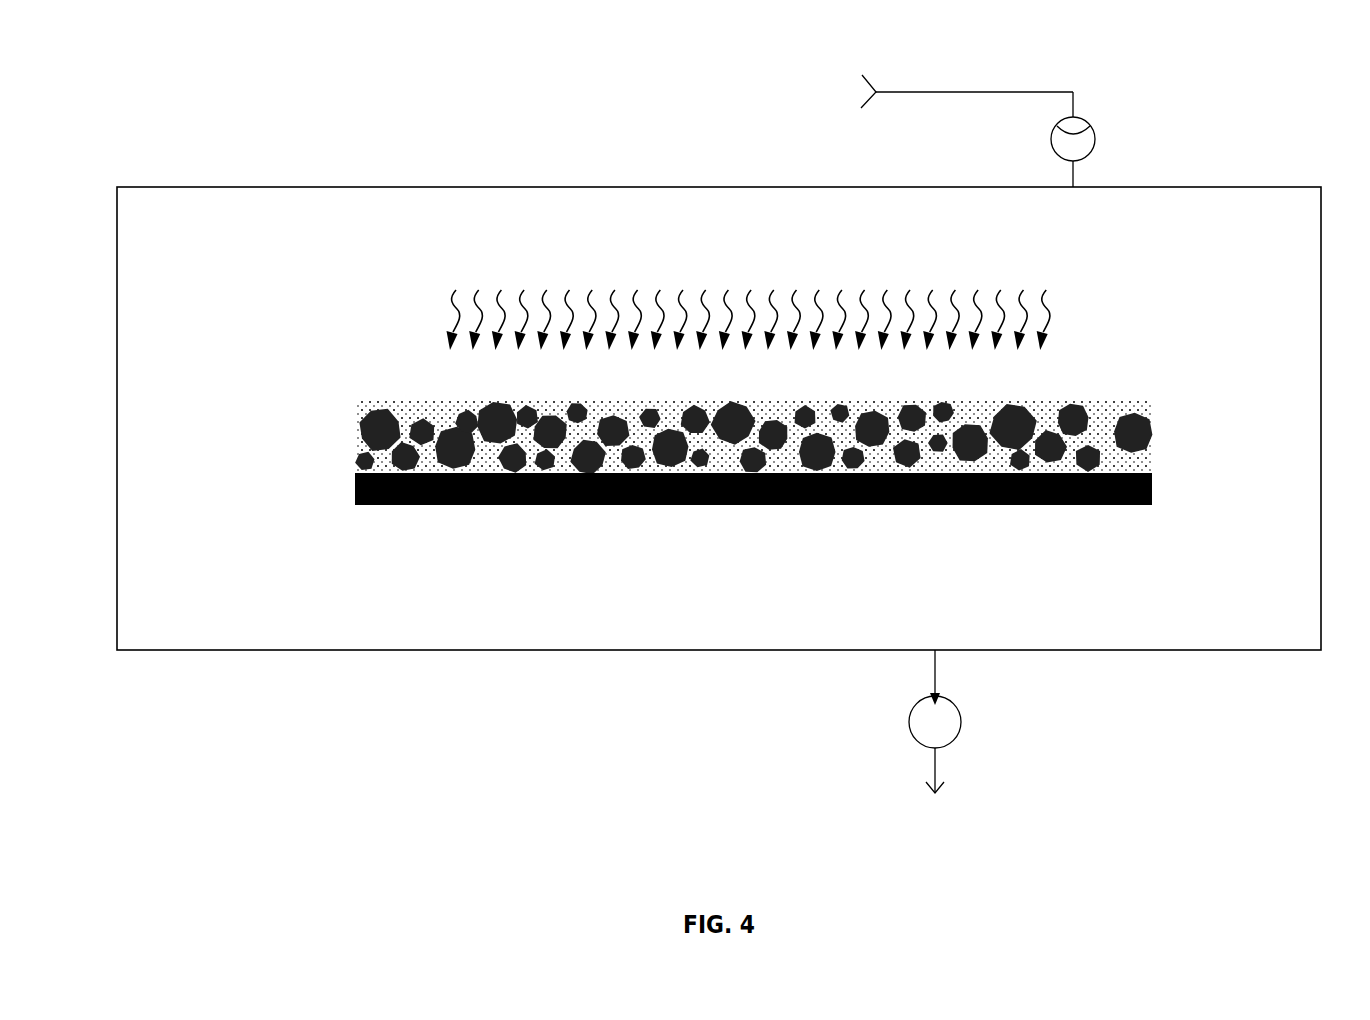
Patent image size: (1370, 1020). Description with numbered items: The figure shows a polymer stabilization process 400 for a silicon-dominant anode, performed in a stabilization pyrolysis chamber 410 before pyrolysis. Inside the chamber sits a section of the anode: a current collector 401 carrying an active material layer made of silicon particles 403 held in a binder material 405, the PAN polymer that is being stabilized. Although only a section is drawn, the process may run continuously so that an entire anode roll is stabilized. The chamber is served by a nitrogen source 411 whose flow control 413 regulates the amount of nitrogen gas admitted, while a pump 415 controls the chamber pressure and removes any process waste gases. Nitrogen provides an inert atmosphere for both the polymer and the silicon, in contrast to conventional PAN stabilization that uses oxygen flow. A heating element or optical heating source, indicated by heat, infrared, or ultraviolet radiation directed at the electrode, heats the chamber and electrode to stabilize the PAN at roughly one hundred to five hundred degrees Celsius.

The polymer stabilization process 400 is at (230, 94).
The current collector 401 is at (753, 489).
The silicon particles 403 is at (382, 413).
The binder material 405 is at (1127, 402).
The stabilization pyrolysis chamber 410 is at (1292, 624).
The nitrogen source 411 is at (911, 100).
The flow control 413 is at (1090, 126).
The pump 415 is at (961, 718).